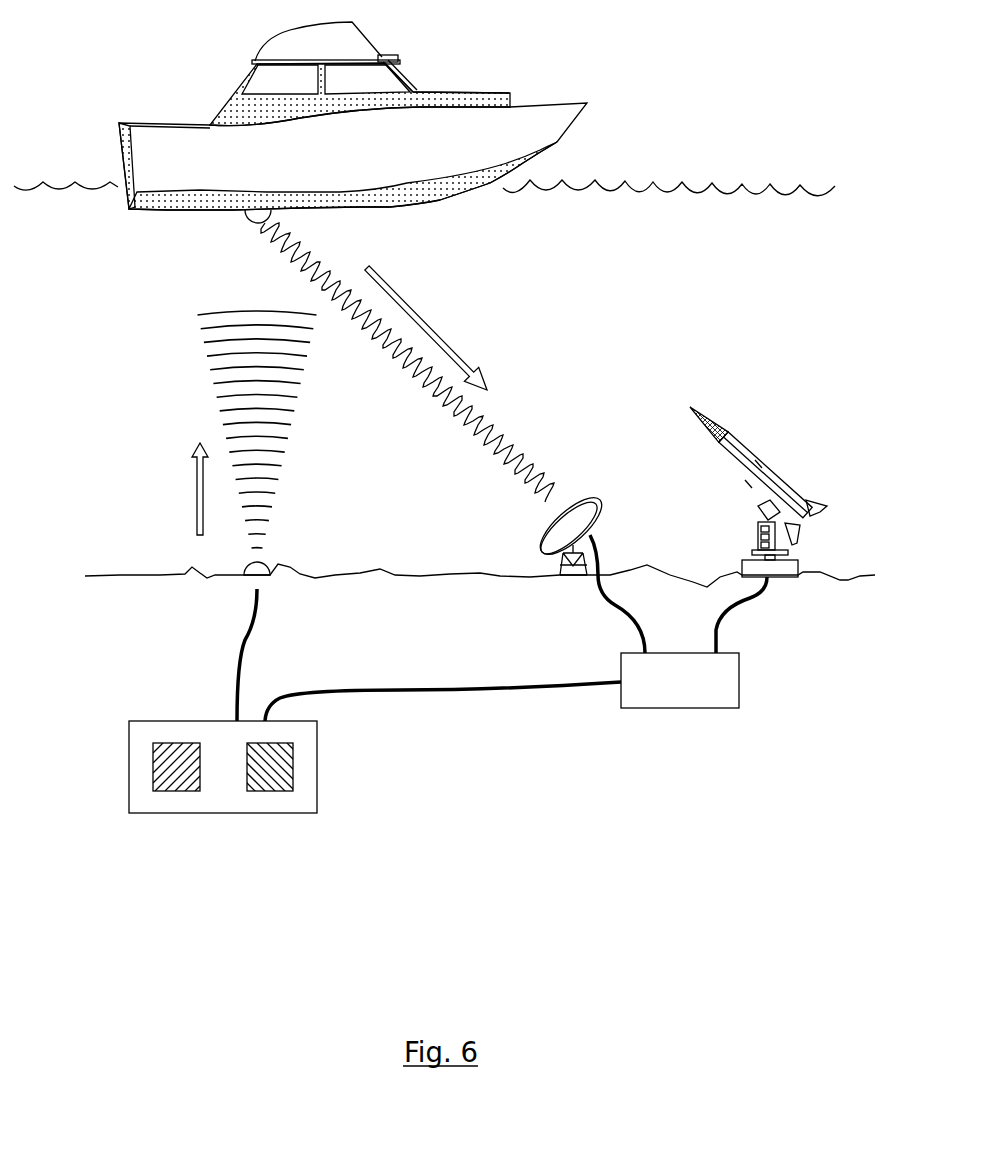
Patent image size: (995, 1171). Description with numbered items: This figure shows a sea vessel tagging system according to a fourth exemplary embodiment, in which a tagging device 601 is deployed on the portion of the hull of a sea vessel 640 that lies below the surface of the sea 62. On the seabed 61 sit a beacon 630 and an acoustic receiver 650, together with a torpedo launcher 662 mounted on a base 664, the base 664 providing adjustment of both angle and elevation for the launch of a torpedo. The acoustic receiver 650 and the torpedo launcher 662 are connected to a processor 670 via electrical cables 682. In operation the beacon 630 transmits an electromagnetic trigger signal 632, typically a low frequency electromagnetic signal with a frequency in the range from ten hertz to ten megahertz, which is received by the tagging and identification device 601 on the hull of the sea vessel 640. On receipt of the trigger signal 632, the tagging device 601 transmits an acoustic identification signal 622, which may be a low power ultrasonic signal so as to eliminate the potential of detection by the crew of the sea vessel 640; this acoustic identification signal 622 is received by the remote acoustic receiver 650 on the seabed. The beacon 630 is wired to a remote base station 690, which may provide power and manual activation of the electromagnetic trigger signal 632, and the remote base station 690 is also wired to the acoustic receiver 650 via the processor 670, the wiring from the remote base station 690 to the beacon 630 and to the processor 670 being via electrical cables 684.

The seabed 61 is at (480, 590).
The surface of the sea 62 is at (424, 168).
The sea vessel 640 is at (118, 143).
The tagging device 601 is at (246, 219).
The acoustic identification signal 622 is at (514, 418).
The electromagnetic trigger signal 632 is at (203, 380).
The beacon 630 is at (270, 566).
The acoustic receiver 650 is at (544, 537).
The torpedo launcher 662 is at (726, 455).
The base 664 is at (750, 548).
The electrical cables 682 is at (714, 627).
The processor 670 is at (740, 680).
The electrical cables 684 is at (387, 689).
The remote base station 690 is at (318, 768).